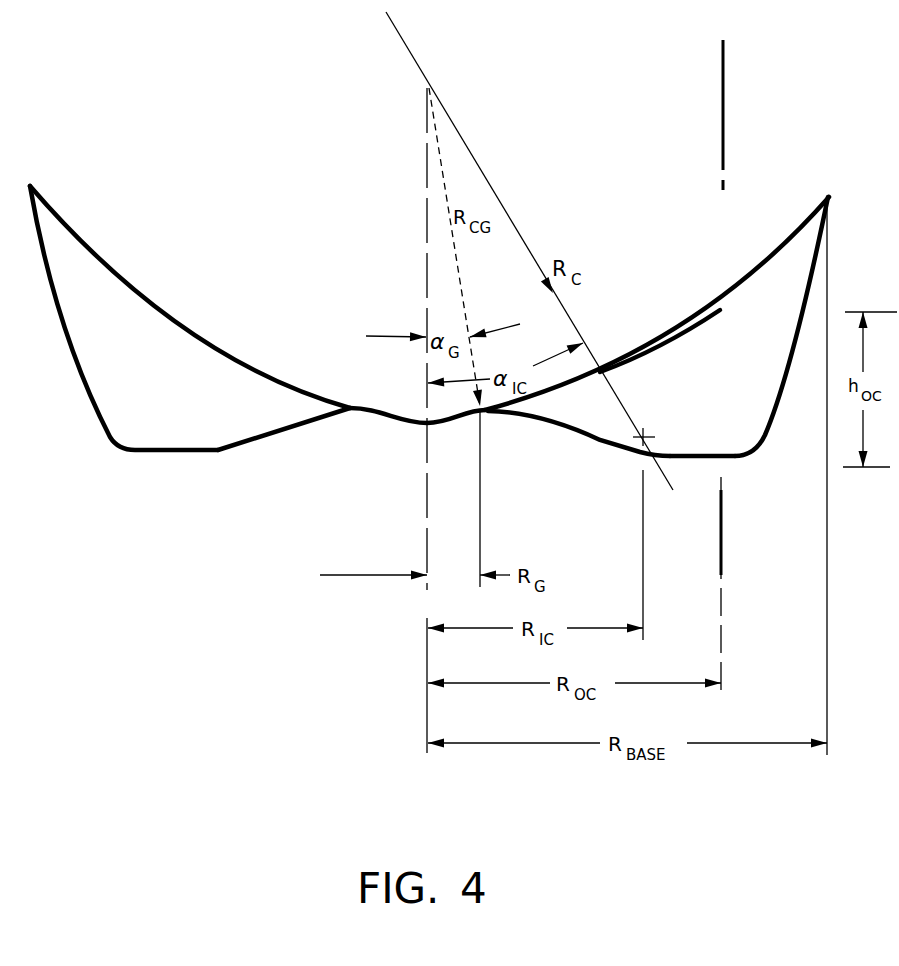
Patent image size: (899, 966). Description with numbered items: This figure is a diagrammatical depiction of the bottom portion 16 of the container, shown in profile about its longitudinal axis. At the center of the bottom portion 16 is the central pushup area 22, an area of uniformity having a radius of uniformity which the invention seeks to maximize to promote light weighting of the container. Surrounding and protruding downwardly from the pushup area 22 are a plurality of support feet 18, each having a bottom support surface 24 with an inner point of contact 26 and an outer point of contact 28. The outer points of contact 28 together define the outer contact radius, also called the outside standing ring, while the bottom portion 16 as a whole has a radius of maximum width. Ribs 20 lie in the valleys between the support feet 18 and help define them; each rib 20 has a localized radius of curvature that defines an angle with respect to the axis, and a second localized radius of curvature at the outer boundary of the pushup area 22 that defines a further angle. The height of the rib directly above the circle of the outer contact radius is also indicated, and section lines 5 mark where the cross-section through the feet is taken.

The section line 5- 5 is at (700, 72).
The bottom portion 16 is at (315, 437).
The support feet 18 is at (755, 348).
The ribs 20 is at (203, 337).
The central pushup area 22 is at (397, 417).
The bottom support surface 24 is at (685, 470).
The inner point of contact 26 is at (650, 457).
The outer point of contact 28 is at (748, 456).